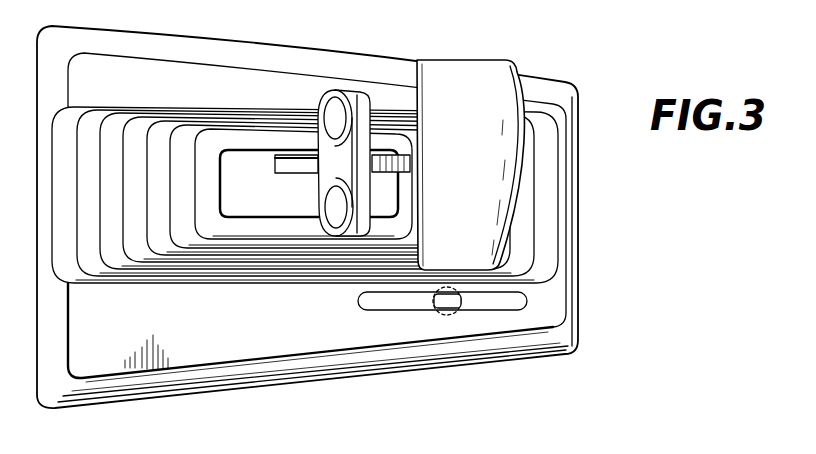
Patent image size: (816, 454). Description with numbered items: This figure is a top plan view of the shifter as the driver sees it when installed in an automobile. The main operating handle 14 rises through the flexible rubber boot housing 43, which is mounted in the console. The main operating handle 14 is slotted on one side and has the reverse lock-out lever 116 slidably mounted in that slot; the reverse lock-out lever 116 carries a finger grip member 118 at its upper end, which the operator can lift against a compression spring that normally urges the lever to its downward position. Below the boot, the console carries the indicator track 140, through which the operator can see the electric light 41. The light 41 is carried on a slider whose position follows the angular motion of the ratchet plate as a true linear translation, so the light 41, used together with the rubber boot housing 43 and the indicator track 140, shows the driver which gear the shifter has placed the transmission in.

The main operating handle 14 is at (404, 166).
The electric light 41 is at (432, 298).
The rubber boot housing 43 is at (190, 268).
The reverse lock-out lever 116 is at (288, 162).
The finger grip member 118 is at (358, 98).
The indicator track 140 is at (462, 299).